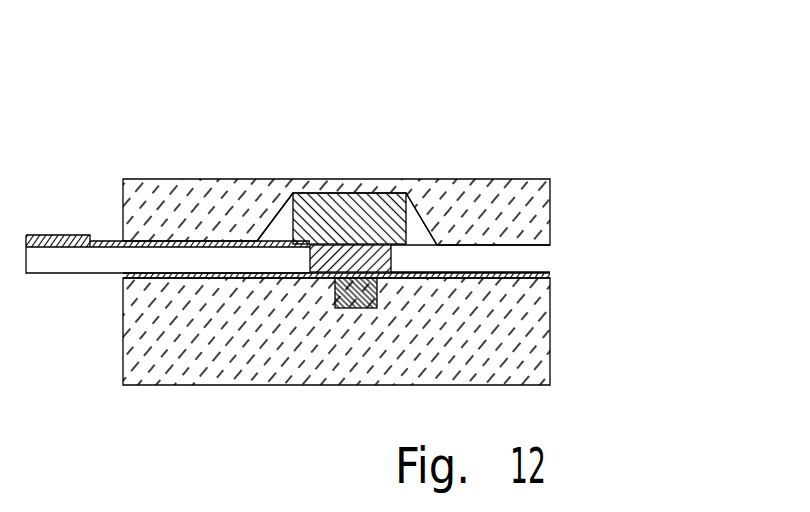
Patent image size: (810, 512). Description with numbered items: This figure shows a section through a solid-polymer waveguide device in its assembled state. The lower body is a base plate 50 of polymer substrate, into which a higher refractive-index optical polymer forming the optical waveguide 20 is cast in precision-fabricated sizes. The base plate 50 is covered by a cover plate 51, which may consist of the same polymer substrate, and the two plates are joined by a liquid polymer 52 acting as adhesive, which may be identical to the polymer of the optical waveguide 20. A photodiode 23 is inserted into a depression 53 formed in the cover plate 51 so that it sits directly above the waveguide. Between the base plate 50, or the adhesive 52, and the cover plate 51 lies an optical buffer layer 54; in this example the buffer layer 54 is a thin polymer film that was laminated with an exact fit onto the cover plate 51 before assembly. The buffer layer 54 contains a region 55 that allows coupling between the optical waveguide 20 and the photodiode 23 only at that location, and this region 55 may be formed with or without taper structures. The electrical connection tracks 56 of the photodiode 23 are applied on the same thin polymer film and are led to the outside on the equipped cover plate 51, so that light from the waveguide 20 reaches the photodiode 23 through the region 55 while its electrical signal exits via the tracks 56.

The optical waveguide 20 is at (378, 294).
The photodiode 23 is at (372, 193).
The base plate 50 is at (541, 369).
The cover plate 51 is at (512, 179).
The liquid polymer 52 is at (560, 283).
The depression 53 is at (445, 222).
The optical buffer layer 54 is at (530, 258).
The region 55 is at (391, 258).
The electrical connection tracks 56 is at (84, 250).